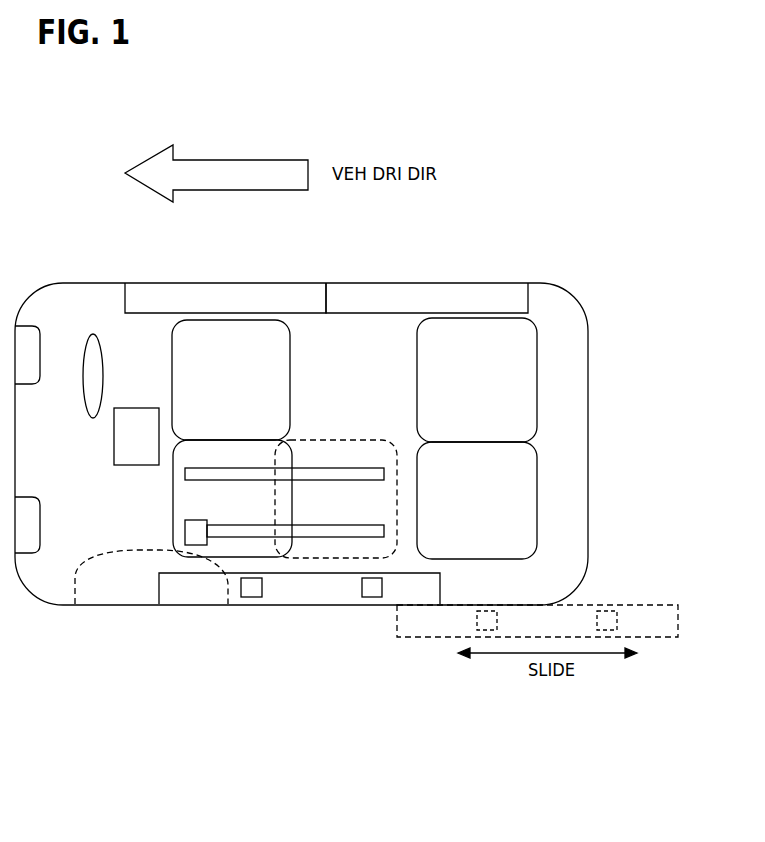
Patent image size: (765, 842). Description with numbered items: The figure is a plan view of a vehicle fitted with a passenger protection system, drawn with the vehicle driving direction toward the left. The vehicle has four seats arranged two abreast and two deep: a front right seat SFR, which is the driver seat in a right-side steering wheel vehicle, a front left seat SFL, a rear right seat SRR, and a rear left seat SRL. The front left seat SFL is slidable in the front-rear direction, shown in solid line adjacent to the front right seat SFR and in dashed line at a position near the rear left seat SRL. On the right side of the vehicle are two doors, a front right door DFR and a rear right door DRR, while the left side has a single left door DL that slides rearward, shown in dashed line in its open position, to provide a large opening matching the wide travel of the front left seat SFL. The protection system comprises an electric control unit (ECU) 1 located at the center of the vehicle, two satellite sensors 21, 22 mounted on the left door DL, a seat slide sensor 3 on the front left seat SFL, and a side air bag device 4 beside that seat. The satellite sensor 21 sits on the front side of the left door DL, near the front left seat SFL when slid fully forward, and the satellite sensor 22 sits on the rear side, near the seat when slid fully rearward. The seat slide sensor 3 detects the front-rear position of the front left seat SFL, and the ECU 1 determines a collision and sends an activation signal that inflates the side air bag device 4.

The electric control unit (ECU) 1 is at (133, 427).
The seat slide sensor 3 is at (190, 530).
The side air bag device 4 is at (78, 584).
The satellite sensor 21 is at (249, 594).
The satellite sensor 22 is at (372, 596).
The left door DL is at (425, 592).
The front right door DFR is at (180, 292).
The rear right door DRR is at (473, 300).
The front right seat SFR is at (268, 387).
The front left seat SFL is at (262, 455).
The rear right seat SRR is at (507, 350).
The rear left seat SRL is at (511, 495).